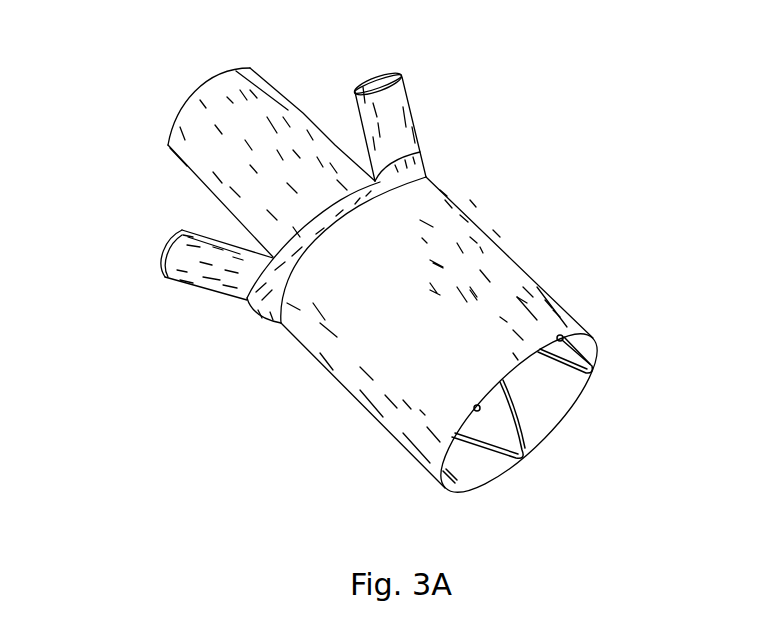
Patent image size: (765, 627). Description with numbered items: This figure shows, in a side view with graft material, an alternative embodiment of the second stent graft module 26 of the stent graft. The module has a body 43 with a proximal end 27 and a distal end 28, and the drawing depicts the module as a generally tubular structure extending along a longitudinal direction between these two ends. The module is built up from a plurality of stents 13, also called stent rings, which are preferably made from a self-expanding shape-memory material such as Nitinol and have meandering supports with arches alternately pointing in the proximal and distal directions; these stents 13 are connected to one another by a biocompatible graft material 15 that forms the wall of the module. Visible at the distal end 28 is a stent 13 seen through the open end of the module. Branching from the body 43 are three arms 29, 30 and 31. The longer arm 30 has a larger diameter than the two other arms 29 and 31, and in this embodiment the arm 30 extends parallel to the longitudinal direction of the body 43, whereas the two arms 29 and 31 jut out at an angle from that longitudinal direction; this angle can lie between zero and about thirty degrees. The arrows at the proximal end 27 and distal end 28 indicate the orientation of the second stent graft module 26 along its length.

The stent 13 is at (588, 346).
The graft material 15 is at (483, 264).
The second stent graft module 26 is at (268, 412).
The proximal end 27 is at (239, 221).
The distal end 28 is at (519, 418).
The arm 29 is at (202, 285).
The arm 30 is at (260, 106).
The arm 31 is at (405, 128).
The body 43 is at (440, 237).